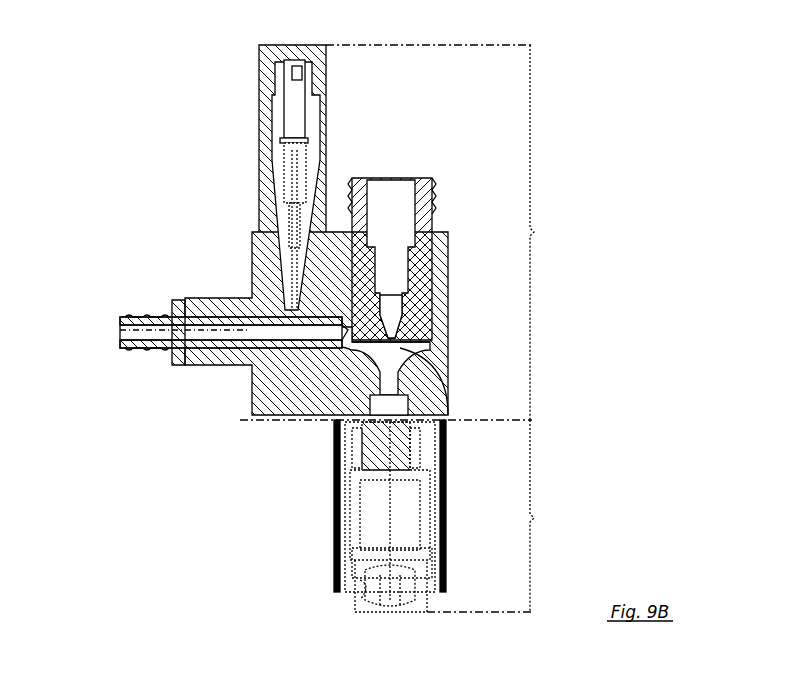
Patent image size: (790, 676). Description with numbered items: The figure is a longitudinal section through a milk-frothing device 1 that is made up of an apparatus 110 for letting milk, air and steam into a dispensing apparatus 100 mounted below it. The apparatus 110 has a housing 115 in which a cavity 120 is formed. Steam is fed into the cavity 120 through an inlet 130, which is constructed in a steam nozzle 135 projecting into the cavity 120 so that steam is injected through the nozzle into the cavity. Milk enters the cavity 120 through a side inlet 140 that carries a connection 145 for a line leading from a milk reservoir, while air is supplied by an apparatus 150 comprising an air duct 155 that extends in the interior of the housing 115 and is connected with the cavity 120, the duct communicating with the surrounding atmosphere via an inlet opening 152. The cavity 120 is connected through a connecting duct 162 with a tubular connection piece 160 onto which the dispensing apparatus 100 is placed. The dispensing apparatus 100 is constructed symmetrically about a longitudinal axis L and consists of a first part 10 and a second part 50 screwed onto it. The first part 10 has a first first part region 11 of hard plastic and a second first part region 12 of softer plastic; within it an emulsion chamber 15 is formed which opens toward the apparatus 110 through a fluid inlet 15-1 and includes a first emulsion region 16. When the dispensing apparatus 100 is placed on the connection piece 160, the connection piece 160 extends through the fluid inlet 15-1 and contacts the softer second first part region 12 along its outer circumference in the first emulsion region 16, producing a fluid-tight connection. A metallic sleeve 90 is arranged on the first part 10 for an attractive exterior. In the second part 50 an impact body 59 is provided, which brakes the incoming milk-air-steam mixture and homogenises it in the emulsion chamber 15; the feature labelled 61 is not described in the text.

The milk-frothing device 1 is at (616, 82).
The first part 10 is at (383, 605).
The first first part region 11 is at (340, 478).
The second first part region 12 is at (340, 450).
The emulsion chamber 15 is at (387, 453).
The fluid inlet 15-1 is at (392, 426).
The first emulsion region 16 is at (368, 533).
The second part 50 is at (348, 592).
The impact body 59 is at (395, 605).
The groove 61 is at (370, 602).
The sleeve 90 is at (340, 503).
The dispensing apparatus 100 is at (553, 516).
The apparatus for letting milk and air into the emulsion chamber 110 is at (451, 232).
The housing 115 is at (250, 248).
The cavity 120 is at (417, 348).
The inlet for the feeding of steam 130 is at (393, 176).
The steam nozzle 135 is at (416, 330).
The inlet for the feeding of milk 140 is at (118, 327).
The connection 145 is at (128, 348).
The apparatus for the feeding of air 150 is at (255, 72).
The inlet opening 152 is at (303, 78).
The air duct 155 is at (286, 223).
The tubular connection piece 160 is at (337, 426).
The connecting duct 162 is at (396, 390).
The longitudinal axis L is at (391, 408).